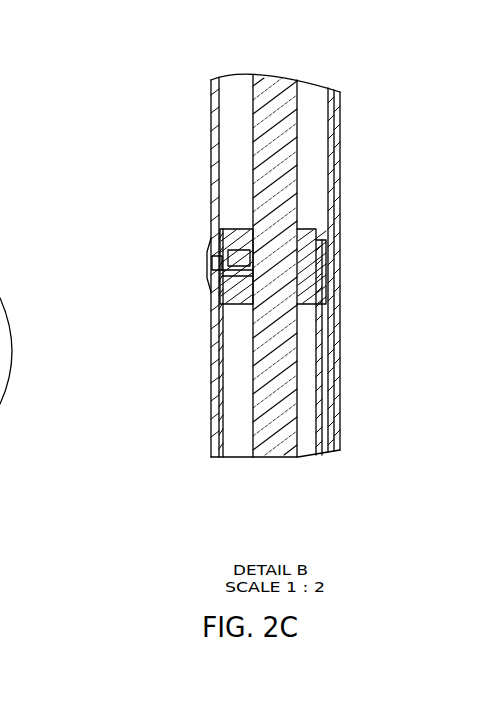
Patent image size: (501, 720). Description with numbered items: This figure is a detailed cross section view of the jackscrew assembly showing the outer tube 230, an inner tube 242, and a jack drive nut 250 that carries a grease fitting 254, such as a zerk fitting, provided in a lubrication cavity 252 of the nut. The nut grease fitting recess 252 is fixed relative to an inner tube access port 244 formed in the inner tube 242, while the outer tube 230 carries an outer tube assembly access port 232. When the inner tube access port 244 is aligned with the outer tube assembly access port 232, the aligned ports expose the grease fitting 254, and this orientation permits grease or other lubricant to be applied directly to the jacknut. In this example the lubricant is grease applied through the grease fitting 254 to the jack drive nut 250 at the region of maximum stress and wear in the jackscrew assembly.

The outer tube 230 is at (210, 172).
The outer tube assembly access port 232 is at (213, 263).
The inner tube 242 is at (222, 413).
The inner tube access port 244 is at (218, 273).
The jack drive nut 250 is at (316, 225).
The lubrication cavity 252 is at (217, 261).
The grease fitting 254 is at (154, 256).